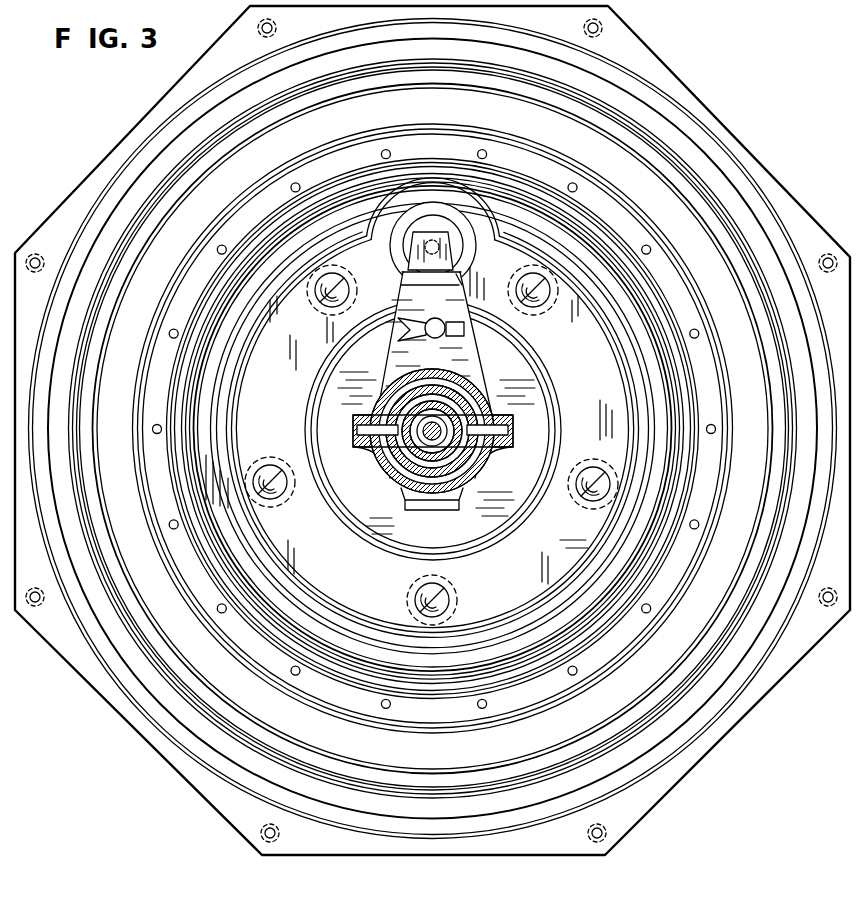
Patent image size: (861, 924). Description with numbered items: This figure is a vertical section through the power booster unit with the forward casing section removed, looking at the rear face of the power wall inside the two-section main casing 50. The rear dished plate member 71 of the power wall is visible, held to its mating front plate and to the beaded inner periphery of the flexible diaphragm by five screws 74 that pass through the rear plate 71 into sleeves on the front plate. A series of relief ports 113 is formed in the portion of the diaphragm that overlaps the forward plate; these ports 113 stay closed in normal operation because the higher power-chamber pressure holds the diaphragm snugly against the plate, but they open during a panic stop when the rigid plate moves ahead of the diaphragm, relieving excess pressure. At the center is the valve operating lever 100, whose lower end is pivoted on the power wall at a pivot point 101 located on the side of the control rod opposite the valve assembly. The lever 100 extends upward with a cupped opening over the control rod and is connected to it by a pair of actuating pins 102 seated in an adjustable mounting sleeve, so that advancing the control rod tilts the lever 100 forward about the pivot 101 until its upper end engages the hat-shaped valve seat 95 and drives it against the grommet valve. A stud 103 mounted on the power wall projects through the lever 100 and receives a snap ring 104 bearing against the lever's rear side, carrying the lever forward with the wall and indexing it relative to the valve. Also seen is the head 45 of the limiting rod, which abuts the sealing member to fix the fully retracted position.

The main casing 50 is at (708, 93).
The rear plate member 71 is at (427, 675).
The relief ports 113 is at (216, 610).
The pivot point 101 is at (462, 503).
The valve seat 95 is at (398, 232).
The valve operating lever 100 is at (464, 283).
The stud 103 is at (430, 336).
The actuating pins 102 is at (353, 431).
The head 45 is at (474, 390).
The screws 74 is at (450, 601).
The snap ring 104 is at (385, 449).